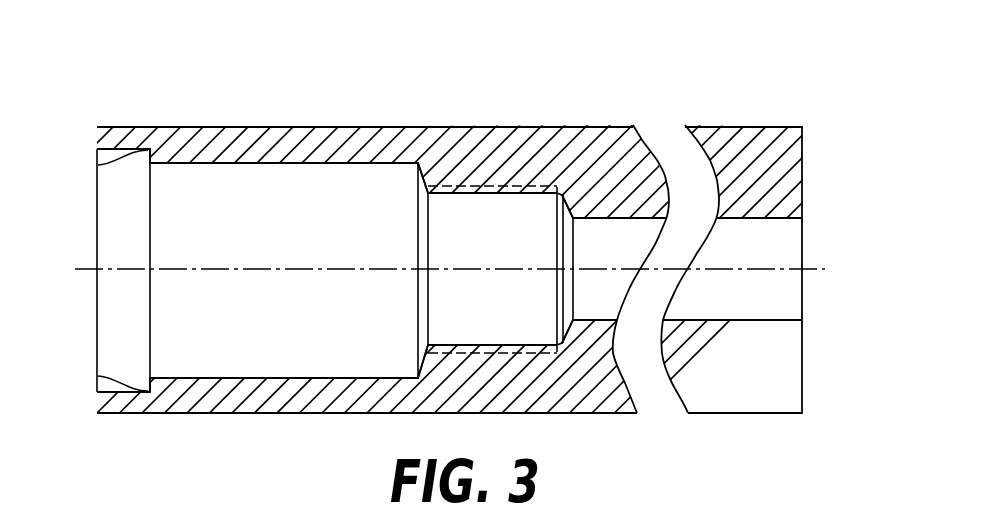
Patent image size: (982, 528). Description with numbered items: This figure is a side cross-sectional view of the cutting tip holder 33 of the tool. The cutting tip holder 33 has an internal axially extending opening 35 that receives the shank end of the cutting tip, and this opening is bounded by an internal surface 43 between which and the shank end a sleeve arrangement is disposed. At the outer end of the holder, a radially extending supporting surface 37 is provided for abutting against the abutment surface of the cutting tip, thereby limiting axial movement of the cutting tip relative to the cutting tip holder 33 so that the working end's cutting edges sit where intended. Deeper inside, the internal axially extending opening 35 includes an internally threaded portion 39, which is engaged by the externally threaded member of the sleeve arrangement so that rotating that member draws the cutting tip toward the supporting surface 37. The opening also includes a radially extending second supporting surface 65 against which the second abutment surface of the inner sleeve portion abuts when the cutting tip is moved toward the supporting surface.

The cutting tip holder 33 is at (489, 99).
The radially extending supporting surface 37 is at (96, 143).
The radially extending second supporting surface 65 is at (100, 165).
The internal axially extending opening 35 is at (388, 322).
The internal surface 43 is at (375, 165).
The internally threaded portion 39 is at (489, 193).